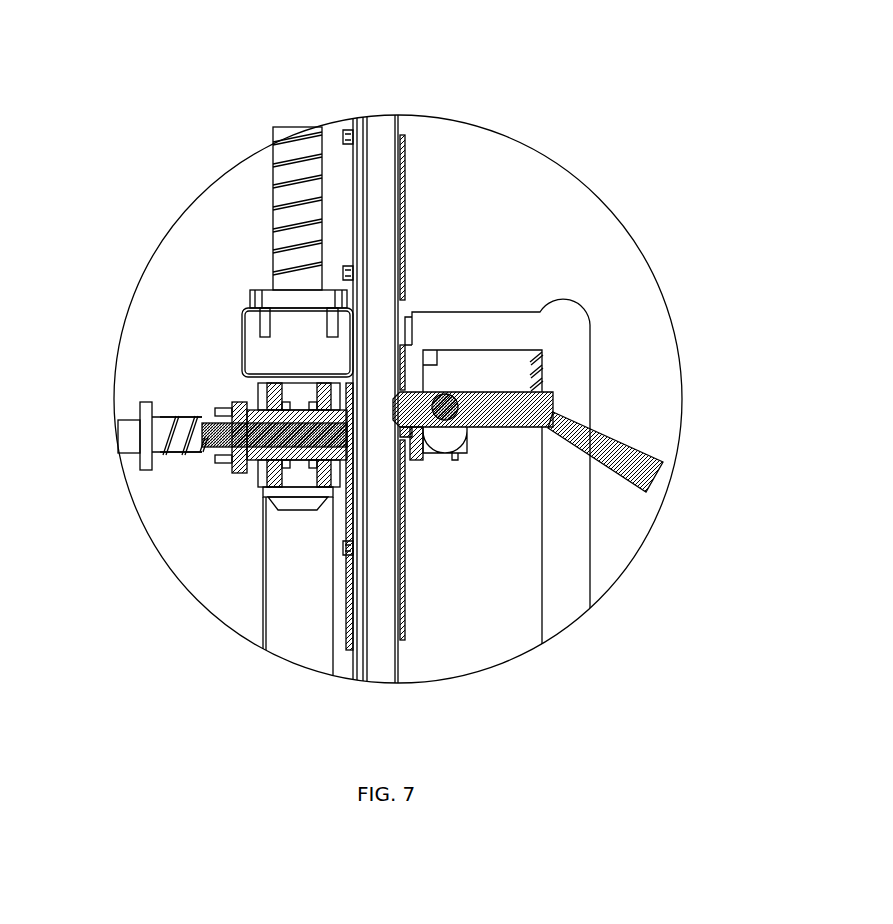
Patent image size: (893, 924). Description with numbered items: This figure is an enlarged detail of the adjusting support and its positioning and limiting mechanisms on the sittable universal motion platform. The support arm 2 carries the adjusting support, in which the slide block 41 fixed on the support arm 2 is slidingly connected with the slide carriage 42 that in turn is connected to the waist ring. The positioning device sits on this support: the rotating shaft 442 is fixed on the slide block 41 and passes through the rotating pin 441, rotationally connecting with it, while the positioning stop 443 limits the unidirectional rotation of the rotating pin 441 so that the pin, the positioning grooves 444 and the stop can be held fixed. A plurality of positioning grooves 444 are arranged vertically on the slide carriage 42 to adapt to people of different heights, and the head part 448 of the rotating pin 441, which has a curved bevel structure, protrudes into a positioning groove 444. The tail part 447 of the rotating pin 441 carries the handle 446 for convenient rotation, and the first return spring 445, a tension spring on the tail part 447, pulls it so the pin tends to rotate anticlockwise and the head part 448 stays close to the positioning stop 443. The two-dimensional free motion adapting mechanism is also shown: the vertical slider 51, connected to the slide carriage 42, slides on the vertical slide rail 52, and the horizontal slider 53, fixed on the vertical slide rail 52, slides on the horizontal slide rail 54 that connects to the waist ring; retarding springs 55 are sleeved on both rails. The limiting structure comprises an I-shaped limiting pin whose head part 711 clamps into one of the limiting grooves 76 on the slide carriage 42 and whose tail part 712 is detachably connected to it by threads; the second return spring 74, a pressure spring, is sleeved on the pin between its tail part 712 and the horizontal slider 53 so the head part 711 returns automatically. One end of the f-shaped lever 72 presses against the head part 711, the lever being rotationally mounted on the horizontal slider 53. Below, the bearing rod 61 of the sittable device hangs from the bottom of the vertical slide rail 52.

The support arm 2 is at (568, 342).
The slide block 41 is at (412, 363).
The slide carriage 42 is at (383, 198).
The vertical slider 51 is at (297, 325).
The vertical slide rail 52 is at (312, 237).
The horizontal slider 53 is at (258, 470).
The horizontal slide rail 54 is at (165, 435).
The retarding spring 55 is at (295, 172).
The bearing rod 61 is at (300, 595).
The f-shaped lever 72 is at (190, 453).
The second return spring 74 is at (247, 470).
The limiting groove 76 is at (258, 403).
The head part of limiting pin 711 is at (232, 465).
The tail part of limiting pin 712 is at (338, 412).
The rotating pin 441 is at (503, 423).
The rotating shaft 442 is at (453, 393).
The positioning stop 443 is at (430, 452).
The positioning groove 444 is at (405, 470).
The first return spring 445 is at (545, 378).
The handle 446 is at (647, 492).
The tail part of rotating pin 447 is at (542, 425).
The head part of rotating pin 448 is at (438, 427).